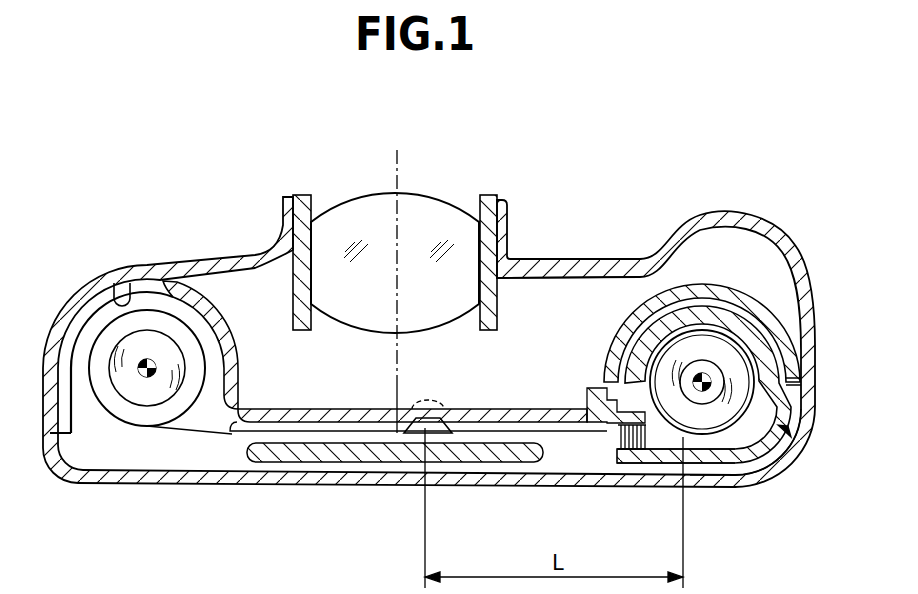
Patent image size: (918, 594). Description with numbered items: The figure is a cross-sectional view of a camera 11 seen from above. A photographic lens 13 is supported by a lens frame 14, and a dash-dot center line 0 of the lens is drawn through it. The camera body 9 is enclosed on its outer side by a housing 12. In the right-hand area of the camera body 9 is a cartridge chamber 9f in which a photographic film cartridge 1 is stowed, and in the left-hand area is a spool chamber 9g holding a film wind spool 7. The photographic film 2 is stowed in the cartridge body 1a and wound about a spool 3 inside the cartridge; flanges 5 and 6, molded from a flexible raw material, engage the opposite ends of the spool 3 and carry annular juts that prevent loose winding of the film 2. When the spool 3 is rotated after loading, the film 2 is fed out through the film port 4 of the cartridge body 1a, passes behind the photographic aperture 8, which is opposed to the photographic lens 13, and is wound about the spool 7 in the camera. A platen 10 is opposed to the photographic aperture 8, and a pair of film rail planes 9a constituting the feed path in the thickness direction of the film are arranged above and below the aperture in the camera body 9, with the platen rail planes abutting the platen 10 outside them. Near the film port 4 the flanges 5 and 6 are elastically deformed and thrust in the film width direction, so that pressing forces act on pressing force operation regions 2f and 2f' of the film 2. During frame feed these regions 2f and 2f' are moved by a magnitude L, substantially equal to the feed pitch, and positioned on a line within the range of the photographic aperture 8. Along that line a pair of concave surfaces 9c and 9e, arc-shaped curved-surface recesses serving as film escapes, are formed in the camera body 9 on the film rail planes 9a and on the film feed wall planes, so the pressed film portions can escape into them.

The optical axis 0 is at (392, 190).
The photographic film cartridge 1 is at (797, 446).
The cartridge body 1a is at (777, 463).
The photographic film 2 is at (560, 438).
The pressing force operation region 2f is at (704, 512).
The pressing force operation region 2f' is at (676, 492).
The spool 3 is at (757, 440).
The film port 4 is at (604, 451).
The flange 5 is at (713, 420).
The flange 6 is at (702, 451).
The film wind spool 7 is at (149, 348).
The photographic aperture 8 is at (473, 420).
The camera body 9 is at (548, 407).
The film rail planes 9a is at (340, 432).
The concave surface 9c is at (405, 434).
The concave surface 9e is at (432, 408).
The cartridge chamber 9f is at (687, 281).
The spool chamber 9g is at (121, 297).
The platen 10 is at (277, 456).
The camera 11 is at (578, 248).
The housing 12 is at (237, 263).
The photographic lens 13 is at (446, 196).
The lens frame 14 is at (490, 198).